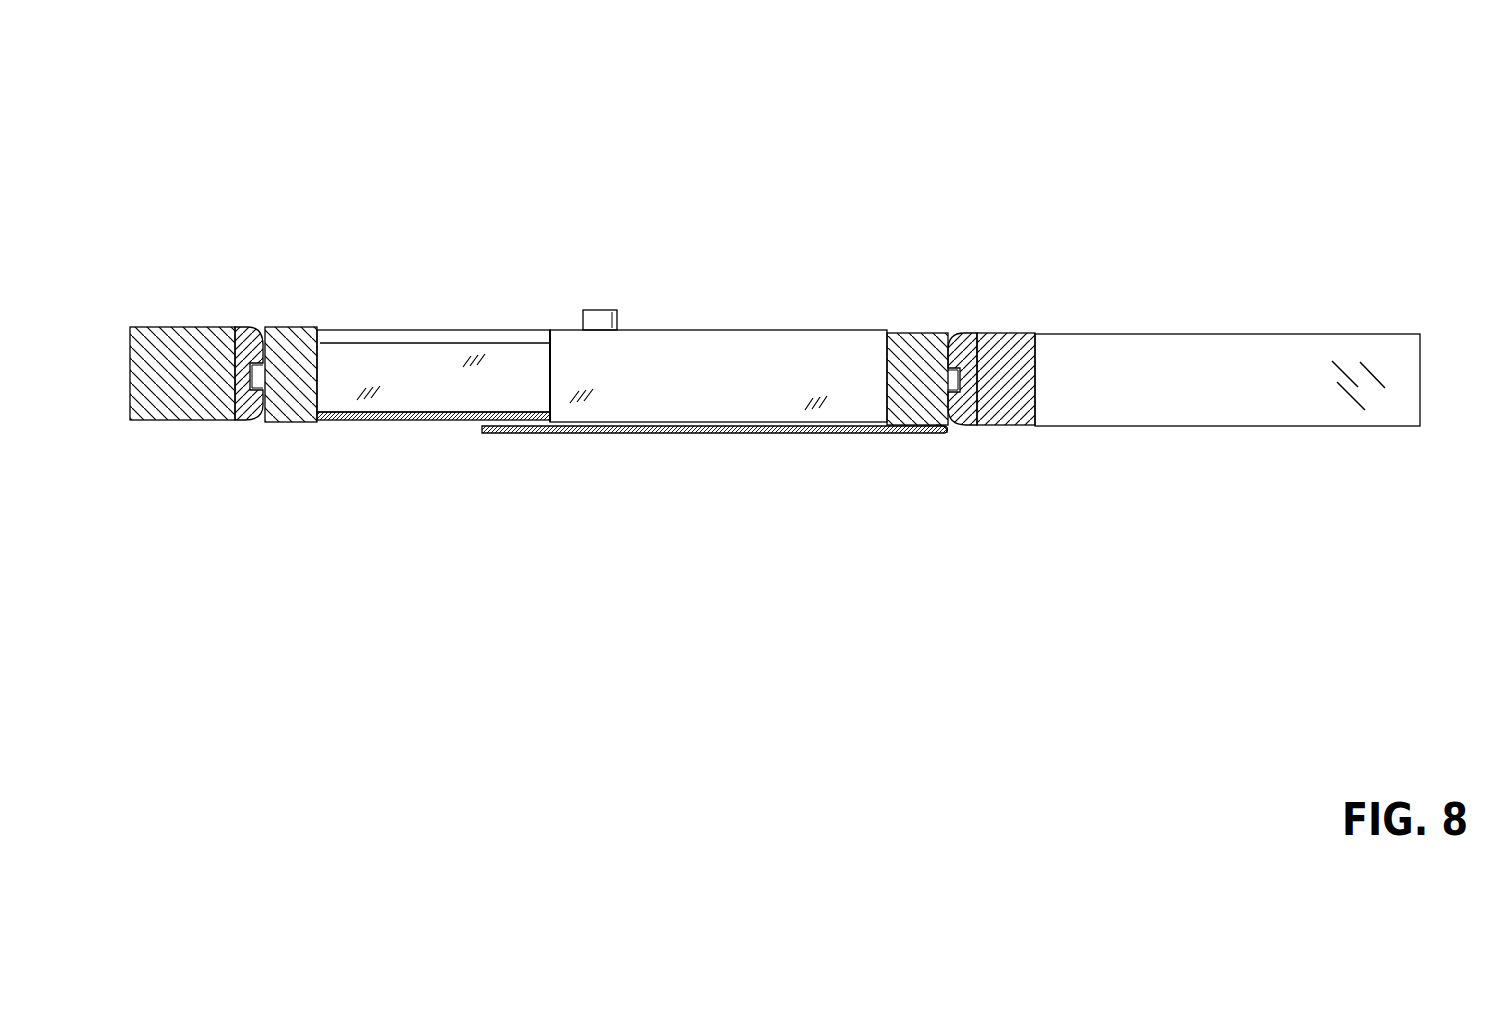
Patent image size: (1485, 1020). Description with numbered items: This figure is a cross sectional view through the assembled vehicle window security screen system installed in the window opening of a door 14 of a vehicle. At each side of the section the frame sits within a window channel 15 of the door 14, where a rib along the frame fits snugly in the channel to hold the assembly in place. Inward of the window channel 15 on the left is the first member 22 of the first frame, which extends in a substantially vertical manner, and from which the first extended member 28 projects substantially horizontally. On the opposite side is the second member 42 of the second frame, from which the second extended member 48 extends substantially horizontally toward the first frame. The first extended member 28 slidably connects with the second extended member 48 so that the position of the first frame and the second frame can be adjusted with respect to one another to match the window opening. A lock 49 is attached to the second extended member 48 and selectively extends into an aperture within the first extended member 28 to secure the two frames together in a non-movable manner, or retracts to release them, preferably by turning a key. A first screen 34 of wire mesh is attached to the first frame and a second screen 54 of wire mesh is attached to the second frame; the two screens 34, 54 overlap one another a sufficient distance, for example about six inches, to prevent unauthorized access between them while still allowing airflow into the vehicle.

The door 14 is at (175, 327).
The window channel 15 is at (253, 327).
The first member 22 is at (274, 423).
The first extended member 28 is at (447, 352).
The first screen 34 is at (400, 423).
The second member 42 is at (948, 427).
The second extended member 48 is at (796, 340).
The lock 49 is at (609, 308).
The second screen 54 is at (767, 432).